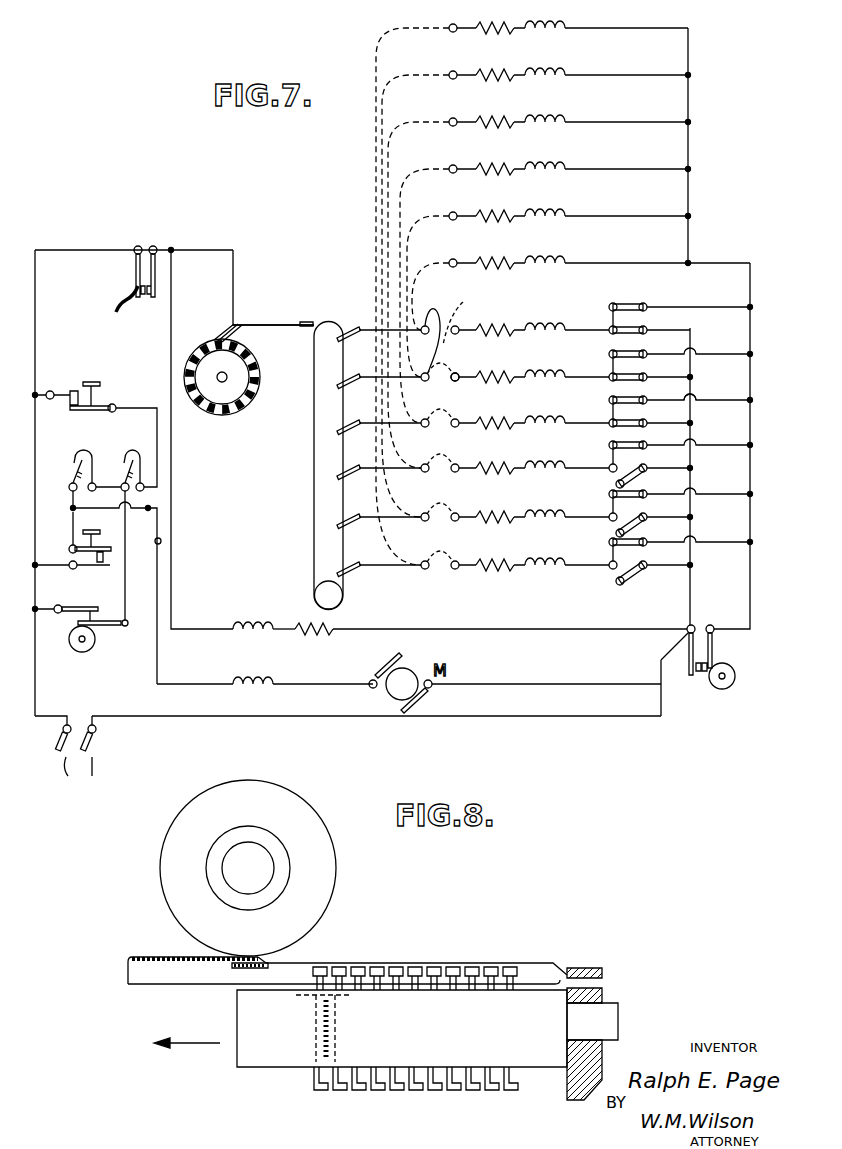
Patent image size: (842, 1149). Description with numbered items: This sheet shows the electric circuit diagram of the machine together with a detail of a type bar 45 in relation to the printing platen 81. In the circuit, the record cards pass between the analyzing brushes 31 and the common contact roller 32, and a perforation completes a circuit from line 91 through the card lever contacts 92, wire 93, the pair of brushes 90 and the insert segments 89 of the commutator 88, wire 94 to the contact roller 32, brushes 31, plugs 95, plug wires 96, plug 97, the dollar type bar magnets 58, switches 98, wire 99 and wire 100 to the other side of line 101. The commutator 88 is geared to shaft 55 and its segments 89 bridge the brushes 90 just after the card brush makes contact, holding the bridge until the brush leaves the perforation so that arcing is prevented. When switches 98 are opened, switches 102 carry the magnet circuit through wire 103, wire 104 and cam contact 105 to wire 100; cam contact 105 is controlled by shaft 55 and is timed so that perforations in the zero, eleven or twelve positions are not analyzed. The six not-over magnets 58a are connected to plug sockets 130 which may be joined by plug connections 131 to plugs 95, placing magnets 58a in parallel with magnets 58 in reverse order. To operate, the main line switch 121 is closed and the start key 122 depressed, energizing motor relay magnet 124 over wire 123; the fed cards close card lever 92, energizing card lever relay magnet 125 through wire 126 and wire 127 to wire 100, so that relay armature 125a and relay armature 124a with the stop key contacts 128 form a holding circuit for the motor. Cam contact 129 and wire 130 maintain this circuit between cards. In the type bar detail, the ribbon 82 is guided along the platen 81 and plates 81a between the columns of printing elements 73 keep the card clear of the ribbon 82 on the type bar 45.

In FIG. 7, the plug sockets 130 is at (450, 120).
In FIG. 7, the not-over indication type bar magnets 58a is at (566, 171).
In FIG. 7, the plug connections 131 is at (378, 200).
In FIG. 7, the wire 93 is at (215, 250).
In FIG. 7, the card lever contacts 92 is at (134, 275).
In FIG. 7, the line 91 is at (35, 355).
In FIG. 7, the brushes 90 is at (244, 324).
In FIG. 7, the wire 94 is at (283, 325).
In FIG. 7, the commutator 88 is at (237, 378).
In FIG. 7, the insert segments 89 is at (252, 398).
In FIG. 7, the stop key contacts 128 is at (72, 393).
In FIG. 7, the relay armature 124a is at (80, 452).
In FIG. 7, the relay armature 125a is at (132, 452).
In FIG. 7, the brushes 31 is at (336, 575).
In FIG. 7, the contact roller 32 is at (325, 556).
In FIG. 7, the plugs 95 is at (429, 331).
In FIG. 7, the plug wires 96 is at (460, 317).
In FIG. 7, the plug 97 is at (458, 373).
In FIG. 7, the switches 102 is at (638, 302).
In FIG. 7, the switches 98 is at (640, 326).
In FIG. 7, the type bar magnets 58 is at (583, 441).
In FIG. 7, the wire 103 is at (703, 496).
In FIG. 7, the wire 123 is at (155, 541).
In FIG. 7, the start key 122 is at (90, 568).
In FIG. 7, the wire 126 is at (172, 592).
In FIG. 7, the card lever relay magnet 125 is at (258, 626).
In FIG. 7, the wire 127 is at (492, 630).
In FIG. 7, the motor relay magnet 124 is at (271, 682).
In FIG. 7, the cam contact 129 is at (100, 628).
In FIG. 7, the shaft 55 is at (72, 650).
In FIG. 7, the main line switch 121 is at (86, 770).
In FIG. 7, the line 101 is at (447, 714).
In FIG. 7, the wire 100 is at (660, 670).
In FIG. 7, the wire 99 is at (692, 602).
In FIG. 7, the wire 104 is at (752, 600).
In FIG. 7, the cam contact 105 is at (714, 665).
In FIG. 8, the printing platen 81 is at (305, 905).
In FIG. 8, the plates 81a is at (158, 973).
In FIG. 8, the ribbon 82 is at (233, 968).
In FIG. 8, the printing elements 73 is at (456, 967).
In FIG. 8, the type bars 45 is at (567, 1040).